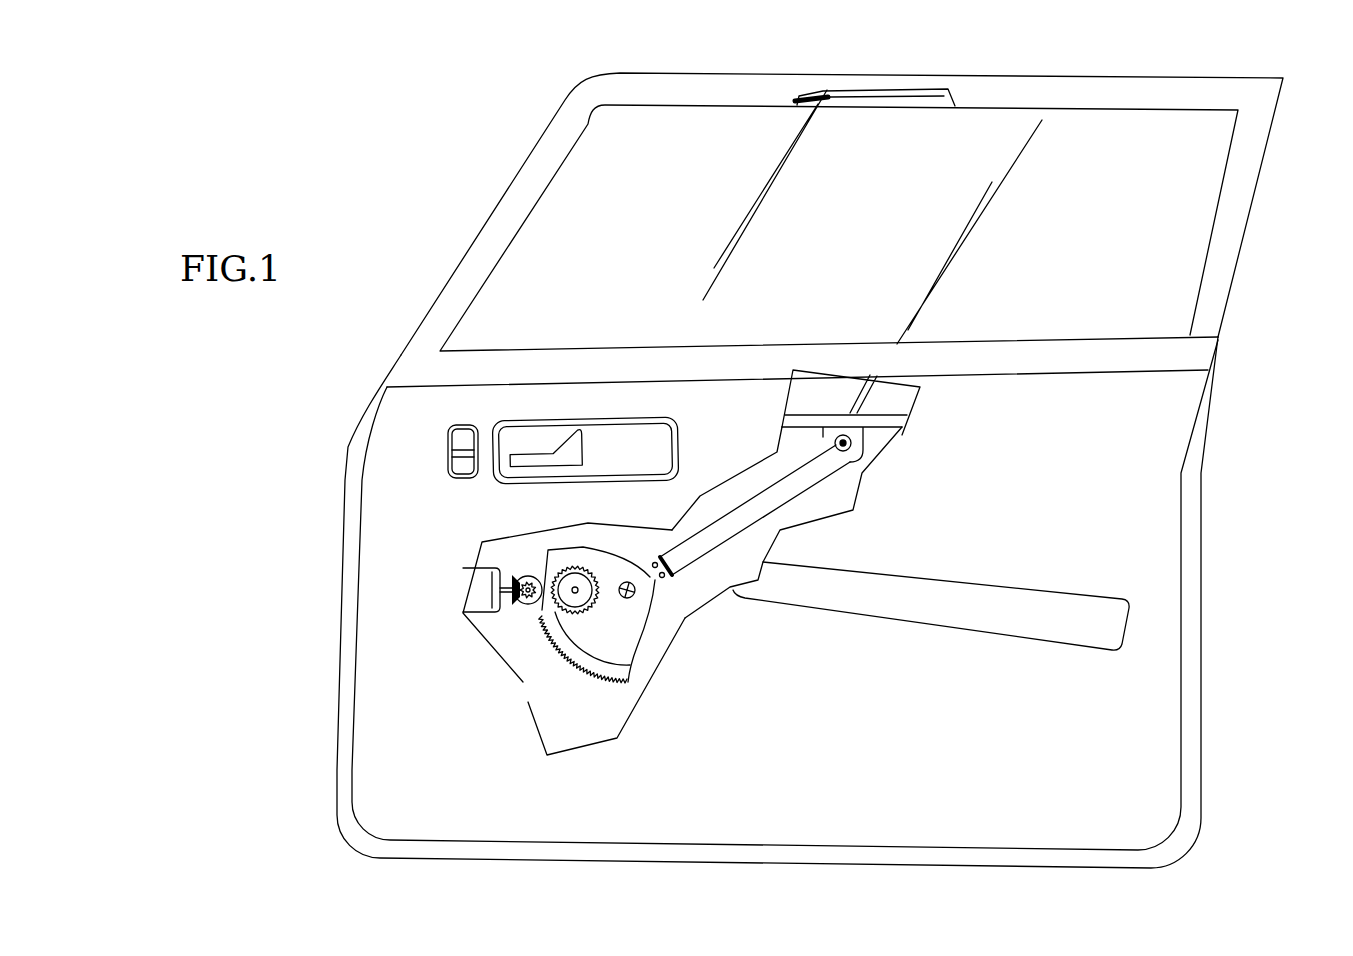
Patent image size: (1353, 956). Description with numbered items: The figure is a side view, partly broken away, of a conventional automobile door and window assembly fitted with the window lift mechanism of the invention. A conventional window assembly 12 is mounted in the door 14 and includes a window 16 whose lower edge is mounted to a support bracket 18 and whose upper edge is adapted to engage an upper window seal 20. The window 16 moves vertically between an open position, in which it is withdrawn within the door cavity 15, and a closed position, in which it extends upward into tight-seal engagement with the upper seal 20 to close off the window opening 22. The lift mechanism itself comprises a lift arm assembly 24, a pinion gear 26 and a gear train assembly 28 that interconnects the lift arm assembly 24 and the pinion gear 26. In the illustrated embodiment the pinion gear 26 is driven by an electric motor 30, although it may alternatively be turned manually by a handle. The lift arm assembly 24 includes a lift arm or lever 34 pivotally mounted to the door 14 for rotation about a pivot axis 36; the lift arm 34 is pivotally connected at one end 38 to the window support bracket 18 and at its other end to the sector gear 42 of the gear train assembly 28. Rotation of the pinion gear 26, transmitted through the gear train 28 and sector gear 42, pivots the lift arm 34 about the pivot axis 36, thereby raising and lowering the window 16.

The window assembly 12 is at (952, 409).
The door 14 is at (1005, 801).
The door cavity 15 is at (721, 571).
The window 16 is at (832, 257).
The support bracket 18 is at (870, 420).
The upper window seal 20 is at (848, 90).
The window opening 22 is at (1210, 216).
The lift arm assembly 24 is at (696, 590).
The pinion gear 26 is at (527, 577).
The gear train assembly 28 is at (565, 662).
The electric motor 30 is at (476, 584).
The lift arm 34 is at (747, 508).
The pivot axis 36 is at (631, 582).
The end of lift arm 38 is at (827, 453).
The sector gear 42 is at (640, 622).